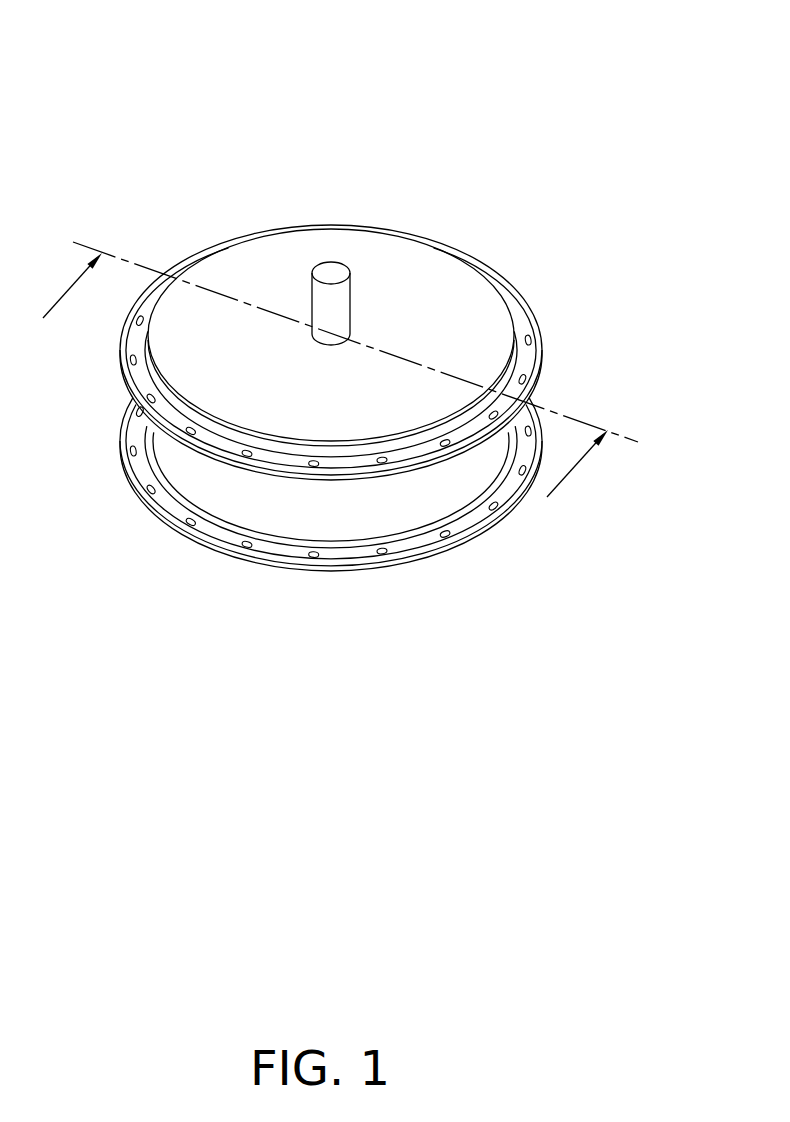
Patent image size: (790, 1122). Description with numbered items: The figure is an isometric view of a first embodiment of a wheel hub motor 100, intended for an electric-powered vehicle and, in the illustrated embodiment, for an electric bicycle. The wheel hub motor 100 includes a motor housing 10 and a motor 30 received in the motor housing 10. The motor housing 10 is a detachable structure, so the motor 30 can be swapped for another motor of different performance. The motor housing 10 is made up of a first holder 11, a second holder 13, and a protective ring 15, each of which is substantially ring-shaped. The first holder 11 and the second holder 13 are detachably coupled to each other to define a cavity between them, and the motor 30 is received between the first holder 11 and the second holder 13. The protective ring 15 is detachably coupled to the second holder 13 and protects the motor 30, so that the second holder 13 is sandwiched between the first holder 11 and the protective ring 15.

The wheel hub motor 100 is at (300, 50).
The motor housing 10 is at (675, 277).
The first holder 11 is at (480, 515).
The second holder 13 is at (540, 395).
The protective ring 15 is at (500, 320).
The motor 30 is at (336, 302).